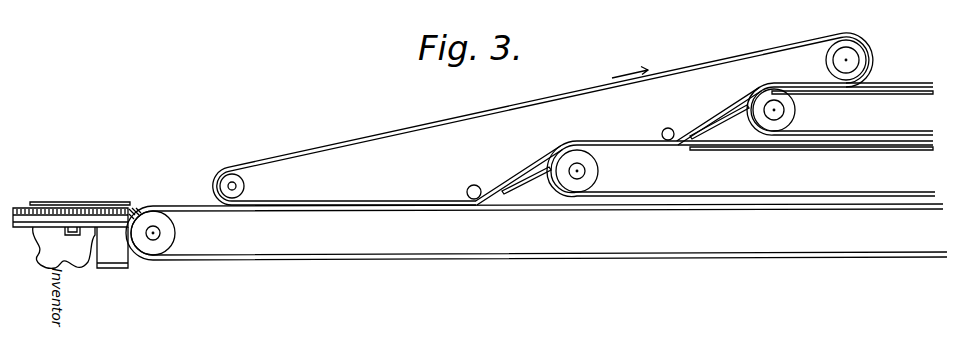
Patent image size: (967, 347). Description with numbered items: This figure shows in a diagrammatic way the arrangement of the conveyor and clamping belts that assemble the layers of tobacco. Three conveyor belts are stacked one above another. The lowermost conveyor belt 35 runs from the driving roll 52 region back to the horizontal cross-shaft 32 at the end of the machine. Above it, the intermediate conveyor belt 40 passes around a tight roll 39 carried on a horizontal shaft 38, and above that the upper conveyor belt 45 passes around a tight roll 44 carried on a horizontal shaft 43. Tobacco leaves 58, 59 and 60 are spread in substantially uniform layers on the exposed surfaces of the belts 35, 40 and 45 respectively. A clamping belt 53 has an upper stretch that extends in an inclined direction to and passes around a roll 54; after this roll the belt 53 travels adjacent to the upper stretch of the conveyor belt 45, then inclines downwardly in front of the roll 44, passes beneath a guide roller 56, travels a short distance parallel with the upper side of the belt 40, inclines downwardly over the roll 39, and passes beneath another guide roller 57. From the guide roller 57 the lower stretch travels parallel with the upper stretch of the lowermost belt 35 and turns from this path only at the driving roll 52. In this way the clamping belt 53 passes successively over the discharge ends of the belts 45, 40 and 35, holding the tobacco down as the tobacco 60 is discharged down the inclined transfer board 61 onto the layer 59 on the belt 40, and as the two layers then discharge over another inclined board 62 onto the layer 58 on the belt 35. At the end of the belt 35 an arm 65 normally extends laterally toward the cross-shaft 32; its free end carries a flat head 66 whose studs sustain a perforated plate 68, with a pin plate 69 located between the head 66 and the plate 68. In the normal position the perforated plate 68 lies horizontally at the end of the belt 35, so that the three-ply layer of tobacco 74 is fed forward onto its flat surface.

The horizontal cross-shaft 32 is at (160, 233).
The lowermost conveyor belt 35 is at (437, 208).
The horizontal shaft 38 is at (585, 170).
The tight roll 39 is at (598, 186).
The conveyor belt 40 is at (782, 182).
The horizontal shaft 43 is at (784, 110).
The tight roll 44 is at (790, 121).
The conveyor belt 45 is at (890, 118).
The driving roll 52 is at (244, 186).
The clamping belt 53 is at (392, 149).
The roll 54 is at (866, 60).
The guide roller 56 is at (668, 128).
The guide roller 57 is at (474, 185).
The tobacco leaves 58 is at (900, 201).
The tobacco leaves 59 is at (907, 148).
The tobacco leaves 60 is at (898, 96).
The inclined transfer board 61 is at (739, 112).
The inclined board 62 is at (541, 170).
The arm 65 is at (88, 268).
The flat head 66 is at (60, 230).
The perforated plate 68 is at (19, 204).
The pin plate 69 is at (112, 247).
The three-ply layer of tobacco 74 is at (112, 201).